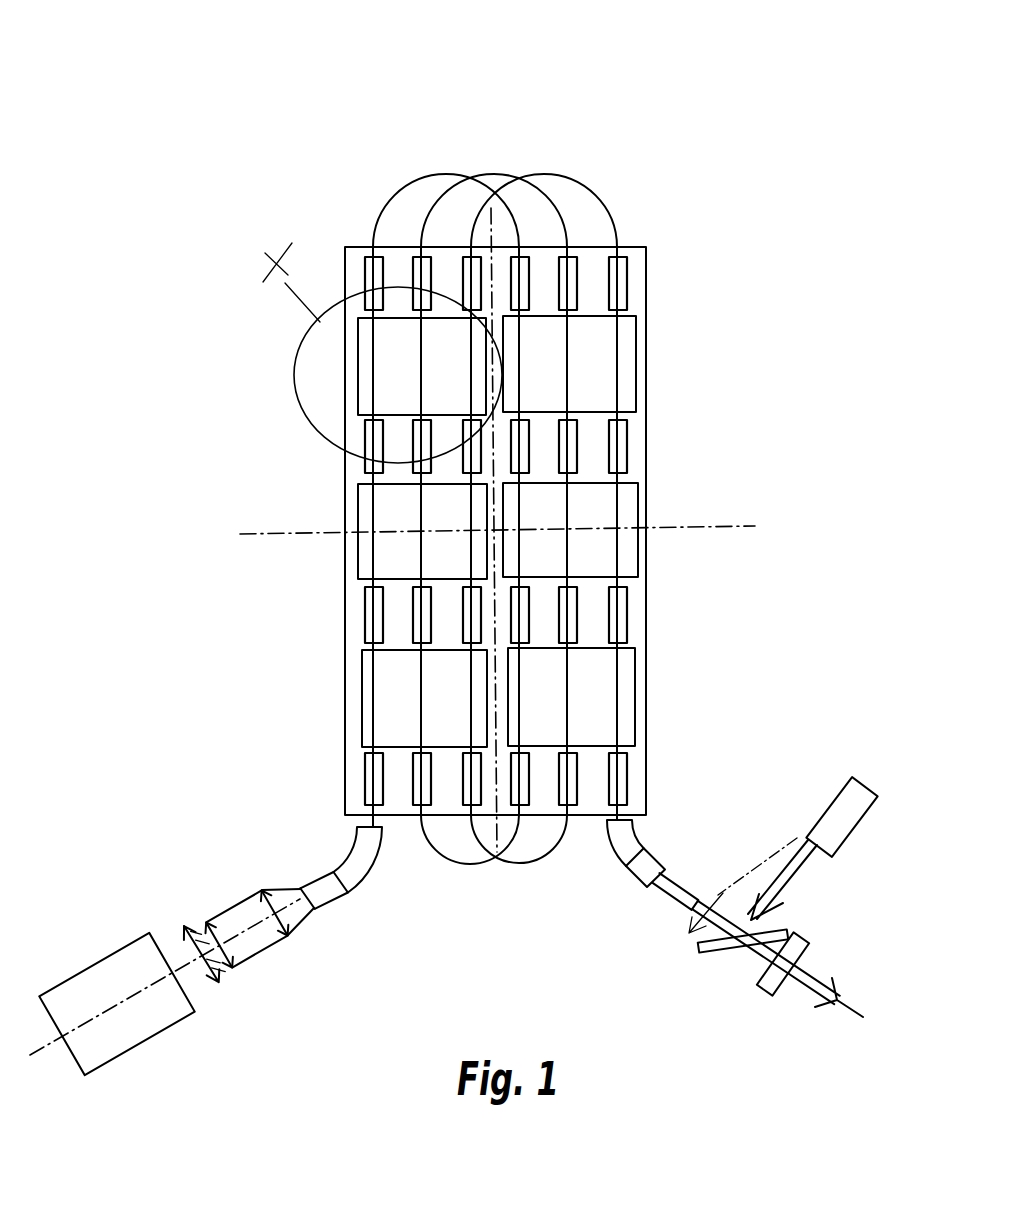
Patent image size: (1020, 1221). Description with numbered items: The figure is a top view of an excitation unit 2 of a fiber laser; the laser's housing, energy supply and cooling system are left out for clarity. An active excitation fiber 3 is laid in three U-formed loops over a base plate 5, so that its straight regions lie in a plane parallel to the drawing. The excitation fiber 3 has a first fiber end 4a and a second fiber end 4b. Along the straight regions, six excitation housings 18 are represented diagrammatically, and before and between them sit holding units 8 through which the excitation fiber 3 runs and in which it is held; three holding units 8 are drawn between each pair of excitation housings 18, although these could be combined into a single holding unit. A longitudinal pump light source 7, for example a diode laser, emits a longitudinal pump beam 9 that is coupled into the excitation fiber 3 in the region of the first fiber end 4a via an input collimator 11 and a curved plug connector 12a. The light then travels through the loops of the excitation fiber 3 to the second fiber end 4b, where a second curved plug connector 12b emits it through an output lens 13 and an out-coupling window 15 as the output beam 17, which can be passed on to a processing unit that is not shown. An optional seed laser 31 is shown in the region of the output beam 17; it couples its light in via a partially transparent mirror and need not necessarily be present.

The excitation unit 2 is at (375, 160).
The excitation fiber 3 is at (583, 180).
The base plate 5 is at (634, 272).
The holding unit 8 is at (627, 447).
The excitation housing 18 is at (362, 367).
The first fiber end 4a is at (360, 812).
The second fiber end 4b is at (645, 815).
The curved plug connector 12a is at (368, 858).
The second curved plug connector 12b is at (630, 862).
The longitudinal pump light source 7 is at (122, 958).
The longitudinal pump beam 9 is at (193, 963).
The input collimator 11 is at (265, 935).
The output lens 13 is at (754, 872).
The out-coupling window 15 is at (795, 933).
The output beam 17 is at (810, 977).
The seed laser 31 is at (863, 778).